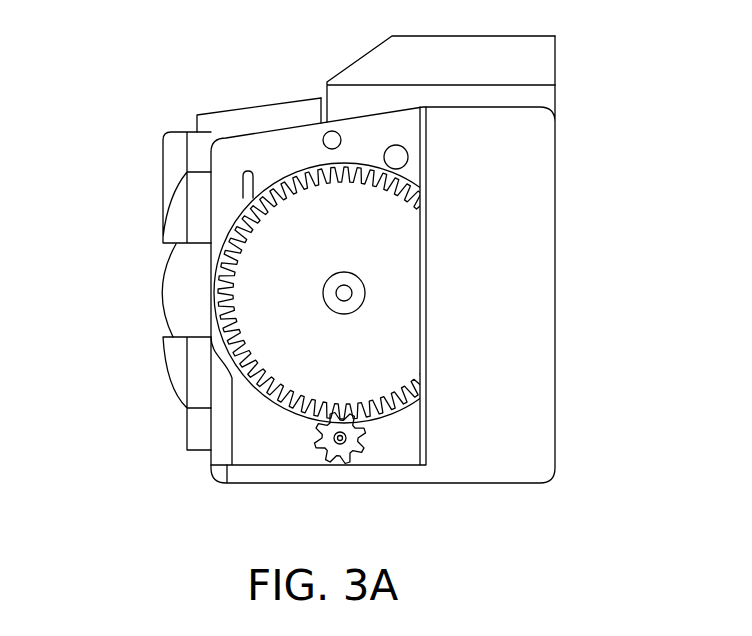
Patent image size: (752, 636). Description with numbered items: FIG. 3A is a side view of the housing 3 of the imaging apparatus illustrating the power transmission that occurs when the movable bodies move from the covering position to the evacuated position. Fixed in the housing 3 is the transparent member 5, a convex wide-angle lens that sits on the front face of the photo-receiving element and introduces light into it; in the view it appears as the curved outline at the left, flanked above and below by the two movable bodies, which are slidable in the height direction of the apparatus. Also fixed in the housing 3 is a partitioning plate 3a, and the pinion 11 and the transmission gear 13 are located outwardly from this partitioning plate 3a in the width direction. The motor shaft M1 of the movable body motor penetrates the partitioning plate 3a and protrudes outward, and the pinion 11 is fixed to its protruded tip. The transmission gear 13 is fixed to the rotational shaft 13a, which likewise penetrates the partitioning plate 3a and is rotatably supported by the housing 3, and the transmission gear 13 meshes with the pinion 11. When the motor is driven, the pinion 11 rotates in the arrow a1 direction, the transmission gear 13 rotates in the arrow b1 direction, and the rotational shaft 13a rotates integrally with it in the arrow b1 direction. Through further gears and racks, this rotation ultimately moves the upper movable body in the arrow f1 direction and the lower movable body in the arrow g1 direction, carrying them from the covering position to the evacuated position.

The housing 3 is at (550, 176).
The partitioning plate 3a is at (263, 148).
The transparent member 5 is at (162, 295).
The pinion 11 is at (322, 452).
The transmission gear 13 is at (359, 364).
The rotational shaft 13a is at (365, 293).
The motor shaft M1 is at (340, 458).
The arrow a1 direction a1 is at (355, 476).
The arrow b1 direction b1 is at (296, 278).
The arrow f1 direction f1 is at (176, 228).
The arrow g1 direction g1 is at (176, 350).